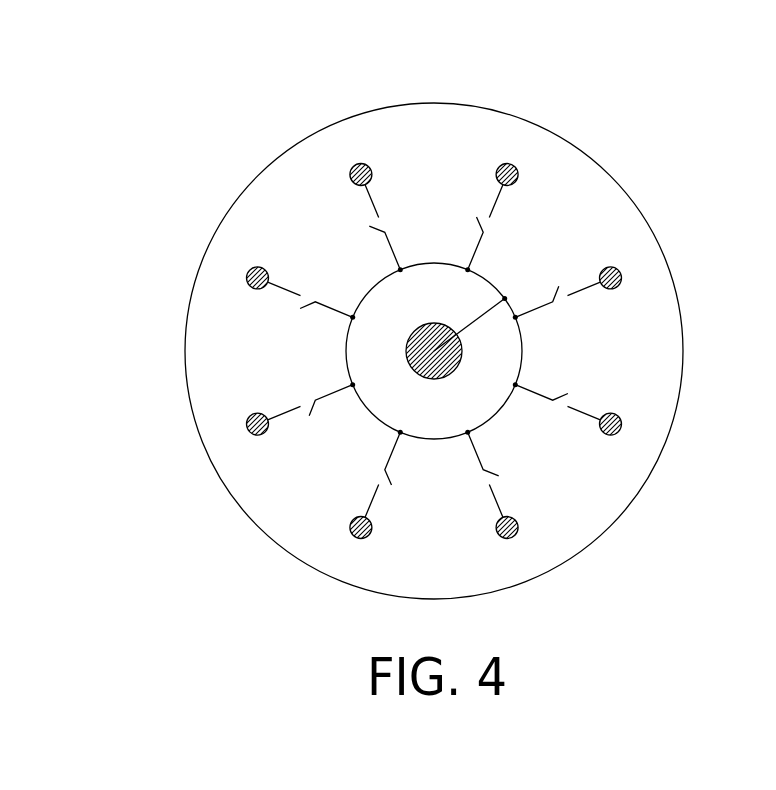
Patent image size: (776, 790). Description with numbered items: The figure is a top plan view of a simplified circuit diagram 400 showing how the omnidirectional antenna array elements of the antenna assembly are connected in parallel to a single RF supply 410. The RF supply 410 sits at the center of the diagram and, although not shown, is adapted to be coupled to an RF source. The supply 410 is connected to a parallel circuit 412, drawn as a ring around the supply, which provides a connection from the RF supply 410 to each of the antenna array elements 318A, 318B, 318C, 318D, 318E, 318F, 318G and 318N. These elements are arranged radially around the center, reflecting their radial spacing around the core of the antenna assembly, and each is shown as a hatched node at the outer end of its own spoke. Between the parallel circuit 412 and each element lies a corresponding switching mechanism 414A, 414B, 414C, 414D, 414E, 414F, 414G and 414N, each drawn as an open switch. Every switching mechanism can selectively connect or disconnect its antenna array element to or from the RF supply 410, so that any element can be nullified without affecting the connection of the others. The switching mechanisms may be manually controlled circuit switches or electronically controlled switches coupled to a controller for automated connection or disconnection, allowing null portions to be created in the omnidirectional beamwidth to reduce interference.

The simplified circuit diagram 400 is at (190, 127).
The RF supply 410 is at (436, 324).
The parallel circuit 412 is at (510, 286).
The switching mechanism 414A is at (316, 426).
The switching mechanism 414B is at (403, 488).
The switching mechanism 414C is at (508, 463).
The switching mechanism 414D is at (572, 380).
The switching mechanism 414E is at (551, 278).
The switching mechanism 414F is at (462, 212).
The switching mechanism 414G is at (369, 234).
The switching mechanism 414N is at (298, 315).
The omnidirectional antenna array element 318A is at (247, 428).
The omnidirectional antenna array element 318B is at (357, 538).
The omnidirectional antenna array element 318C is at (511, 538).
The omnidirectional antenna array element 318D is at (621, 428).
The omnidirectional antenna array element 318E is at (621, 274).
The omnidirectional antenna array element 318F is at (511, 164).
The omnidirectional antenna array element 318G is at (357, 164).
The omnidirectional antenna array element 318N is at (247, 274).